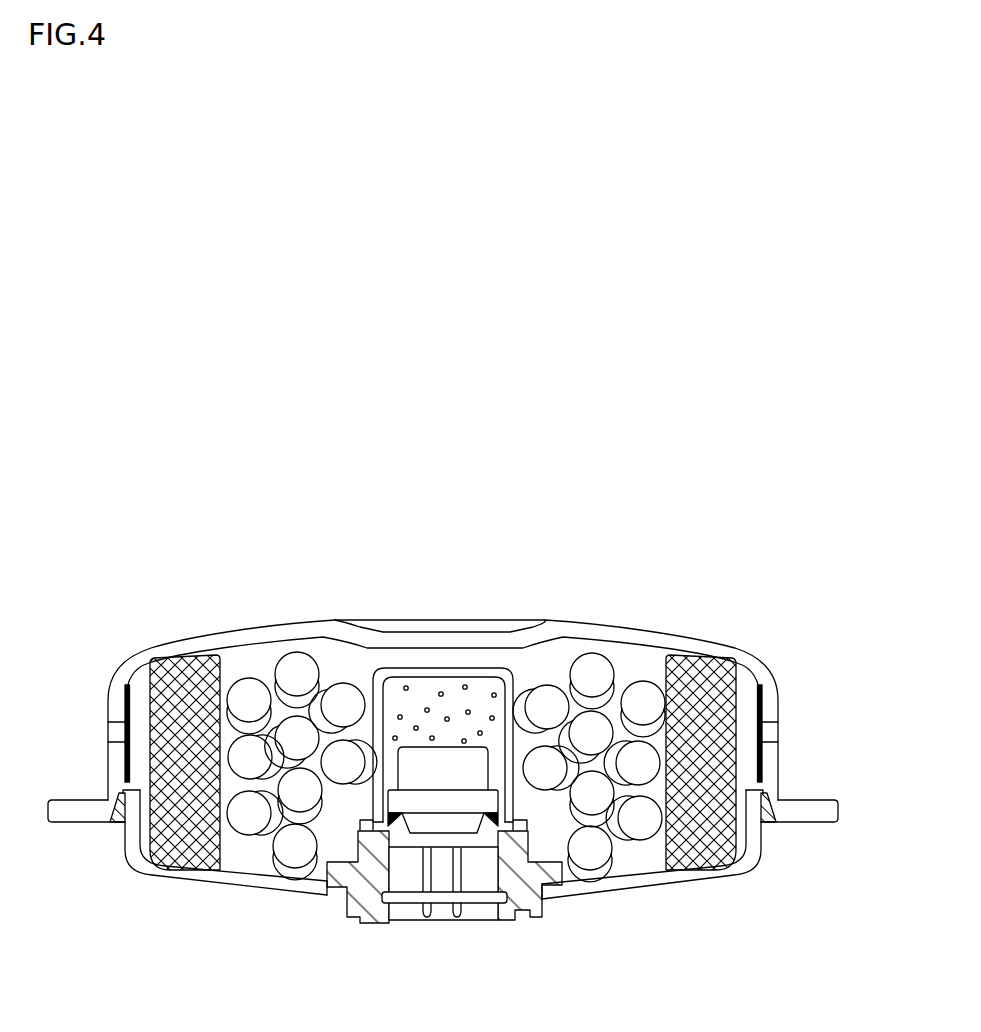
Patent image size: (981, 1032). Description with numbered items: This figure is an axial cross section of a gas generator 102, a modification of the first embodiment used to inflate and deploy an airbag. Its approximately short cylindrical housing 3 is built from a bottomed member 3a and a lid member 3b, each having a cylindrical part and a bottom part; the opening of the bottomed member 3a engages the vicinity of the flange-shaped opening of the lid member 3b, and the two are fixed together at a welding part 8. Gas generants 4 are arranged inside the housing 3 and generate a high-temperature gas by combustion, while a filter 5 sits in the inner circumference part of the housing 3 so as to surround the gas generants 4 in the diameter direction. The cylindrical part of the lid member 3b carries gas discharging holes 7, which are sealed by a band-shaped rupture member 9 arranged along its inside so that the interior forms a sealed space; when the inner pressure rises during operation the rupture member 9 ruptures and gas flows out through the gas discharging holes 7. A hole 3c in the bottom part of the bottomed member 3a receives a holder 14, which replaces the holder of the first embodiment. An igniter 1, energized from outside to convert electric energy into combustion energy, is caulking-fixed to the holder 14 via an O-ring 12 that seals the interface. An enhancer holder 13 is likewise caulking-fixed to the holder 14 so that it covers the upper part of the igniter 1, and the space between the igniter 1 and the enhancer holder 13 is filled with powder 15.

The gas generator 102 is at (583, 463).
The igniter 1 is at (410, 805).
The housing 3 is at (597, 618).
The bottomed member 3a is at (185, 888).
The lid member 3b is at (272, 633).
The hole 3c is at (548, 898).
The gas generants 4 is at (541, 686).
The filter 5 is at (693, 660).
The gas discharging holes 7 is at (110, 733).
The welding part 8 is at (116, 823).
The rupture member 9 is at (121, 703).
The O-ring 12 is at (503, 835).
The enhancer holder 13 is at (395, 668).
The holder 14 is at (333, 888).
The powder 15 is at (415, 700).